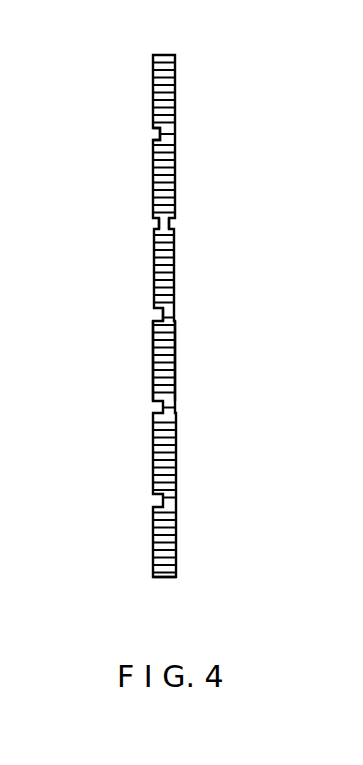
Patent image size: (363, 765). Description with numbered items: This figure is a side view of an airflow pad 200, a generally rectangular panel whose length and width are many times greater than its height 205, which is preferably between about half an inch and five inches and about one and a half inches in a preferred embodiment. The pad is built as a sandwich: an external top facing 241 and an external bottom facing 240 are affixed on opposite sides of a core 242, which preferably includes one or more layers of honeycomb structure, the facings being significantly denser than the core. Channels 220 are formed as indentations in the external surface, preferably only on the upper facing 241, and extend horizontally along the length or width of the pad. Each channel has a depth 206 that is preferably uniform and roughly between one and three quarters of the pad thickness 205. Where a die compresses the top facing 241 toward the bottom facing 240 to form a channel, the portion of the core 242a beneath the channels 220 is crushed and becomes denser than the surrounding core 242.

The airflow pad 200 is at (184, 456).
The channels 220 is at (153, 133).
The channel depth 206 is at (178, 223).
The portion of the core under the channels 242a is at (165, 313).
The core 242 is at (160, 352).
The external top facing 241 is at (153, 338).
The external bottom facing 240 is at (176, 356).
The height 205 is at (123, 594).